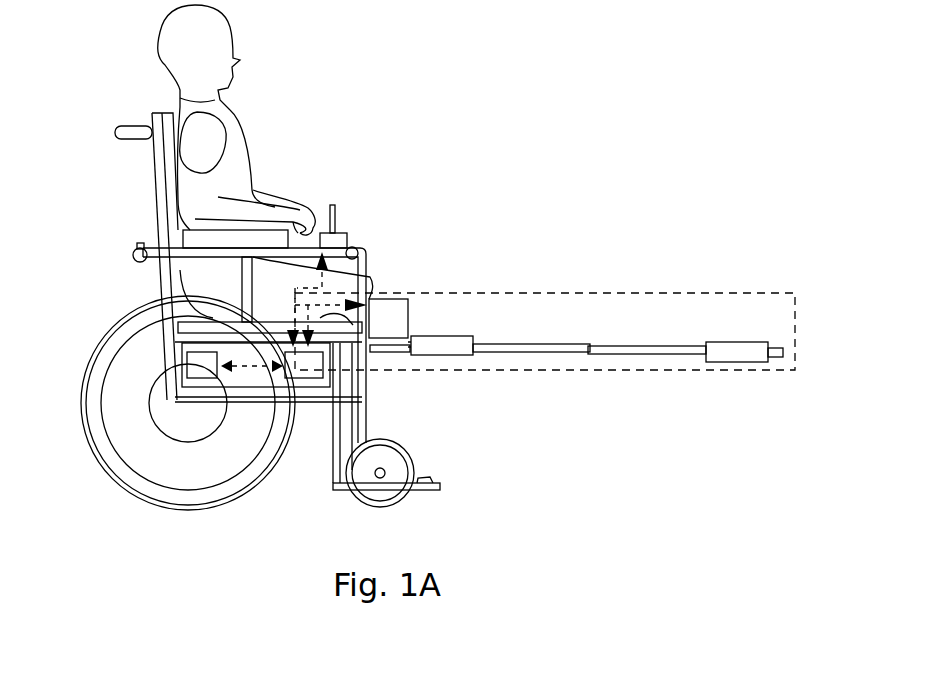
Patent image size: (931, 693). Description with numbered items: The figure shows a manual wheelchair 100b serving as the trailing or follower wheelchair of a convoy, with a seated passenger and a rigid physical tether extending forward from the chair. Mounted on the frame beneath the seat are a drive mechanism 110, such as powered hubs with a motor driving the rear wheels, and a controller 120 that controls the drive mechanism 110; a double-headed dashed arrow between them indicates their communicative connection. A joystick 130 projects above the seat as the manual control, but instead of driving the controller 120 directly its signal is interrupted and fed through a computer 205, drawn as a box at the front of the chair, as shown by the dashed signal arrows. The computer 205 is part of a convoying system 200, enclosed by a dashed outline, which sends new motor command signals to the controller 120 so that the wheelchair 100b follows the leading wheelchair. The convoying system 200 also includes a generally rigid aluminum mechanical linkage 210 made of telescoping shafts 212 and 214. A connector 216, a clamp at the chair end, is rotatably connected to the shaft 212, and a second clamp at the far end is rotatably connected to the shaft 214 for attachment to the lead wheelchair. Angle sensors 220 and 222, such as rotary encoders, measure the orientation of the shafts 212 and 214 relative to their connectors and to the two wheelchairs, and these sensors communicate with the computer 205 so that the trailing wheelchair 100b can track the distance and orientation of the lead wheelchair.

The trailing wheelchair 100b is at (142, 107).
The drive mechanism 110 is at (205, 372).
The controller 120 is at (300, 378).
The joystick 130 is at (335, 193).
The convoying system 200 is at (650, 278).
The computer 205 is at (413, 317).
The mechanical linkage 210 is at (547, 320).
The telescoping shaft 212 is at (543, 352).
The telescoping shaft 214 is at (652, 355).
The connector 216 is at (410, 357).
The angle sensor 220 is at (437, 347).
The angle sensor 222 is at (738, 355).